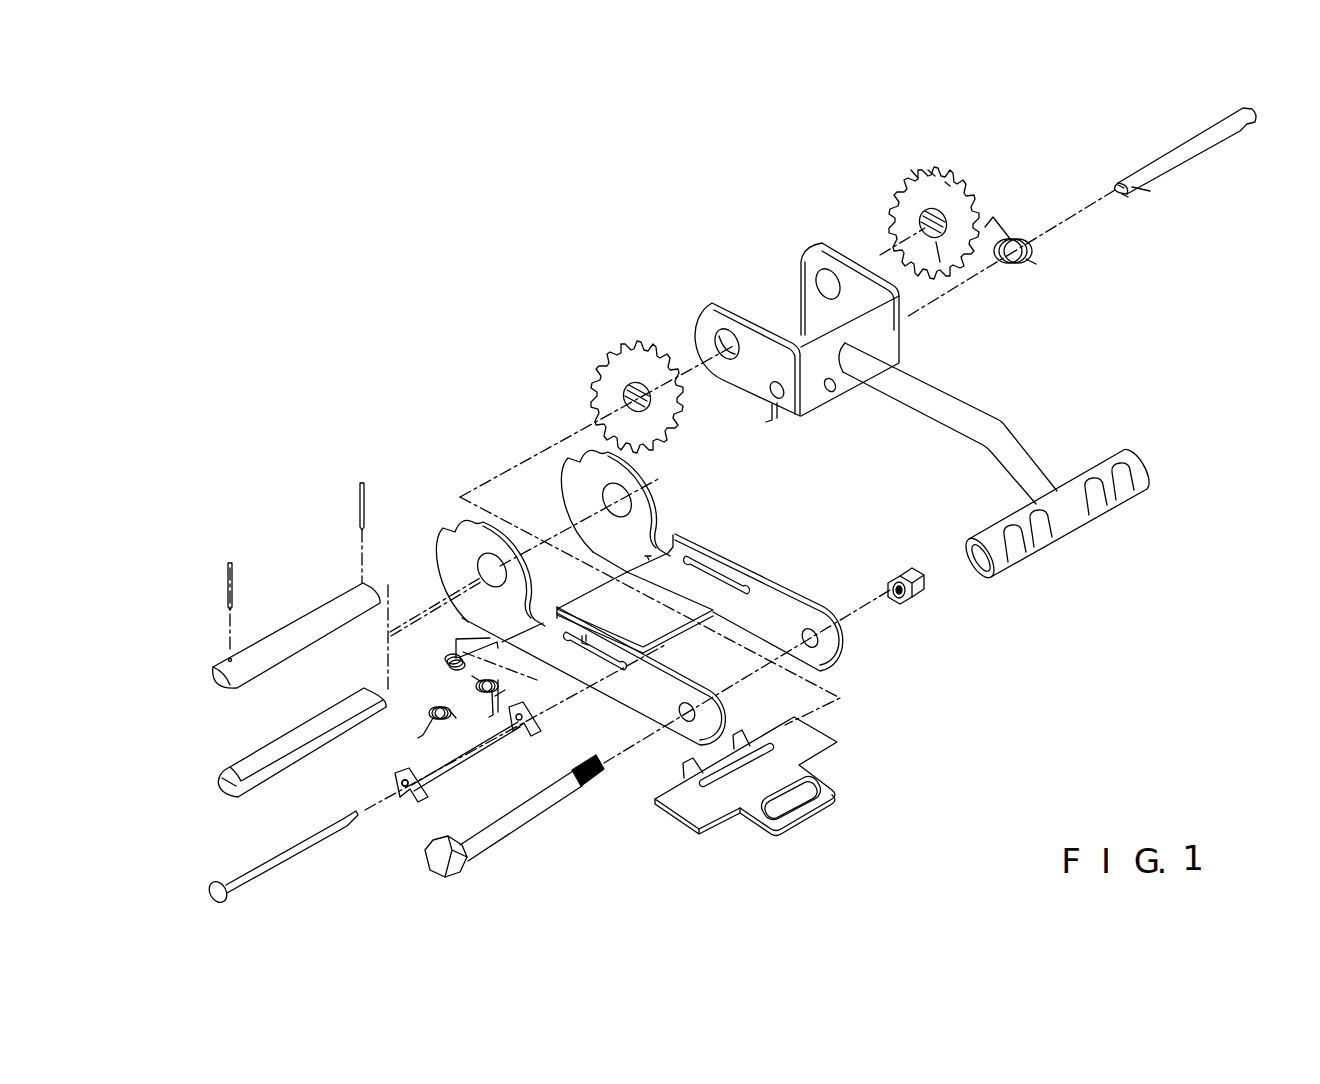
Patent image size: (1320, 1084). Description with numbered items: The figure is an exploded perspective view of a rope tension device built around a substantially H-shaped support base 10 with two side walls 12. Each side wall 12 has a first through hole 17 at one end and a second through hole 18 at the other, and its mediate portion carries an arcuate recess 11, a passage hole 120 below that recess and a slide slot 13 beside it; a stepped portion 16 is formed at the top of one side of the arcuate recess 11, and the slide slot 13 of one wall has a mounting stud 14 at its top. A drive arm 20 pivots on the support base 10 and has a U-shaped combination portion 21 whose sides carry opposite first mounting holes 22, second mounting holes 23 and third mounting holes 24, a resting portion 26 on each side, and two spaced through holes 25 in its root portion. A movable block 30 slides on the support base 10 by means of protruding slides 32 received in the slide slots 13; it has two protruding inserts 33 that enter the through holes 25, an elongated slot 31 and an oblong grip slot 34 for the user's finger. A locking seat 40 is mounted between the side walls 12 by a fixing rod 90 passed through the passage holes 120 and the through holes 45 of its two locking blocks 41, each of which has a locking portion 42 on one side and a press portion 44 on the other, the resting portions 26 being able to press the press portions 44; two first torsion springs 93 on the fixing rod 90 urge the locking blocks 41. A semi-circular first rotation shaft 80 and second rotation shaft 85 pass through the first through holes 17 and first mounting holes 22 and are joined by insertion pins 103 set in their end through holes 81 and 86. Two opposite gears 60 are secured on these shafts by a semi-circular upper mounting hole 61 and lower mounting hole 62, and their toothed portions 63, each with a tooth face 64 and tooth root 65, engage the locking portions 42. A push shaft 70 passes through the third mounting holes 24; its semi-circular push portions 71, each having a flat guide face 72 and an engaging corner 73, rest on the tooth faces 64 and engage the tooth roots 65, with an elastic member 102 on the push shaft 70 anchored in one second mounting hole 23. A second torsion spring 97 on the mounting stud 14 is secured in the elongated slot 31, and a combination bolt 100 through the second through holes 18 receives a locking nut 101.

The support base 10 is at (666, 597).
The arcuate recess 11 is at (702, 547).
The side wall 12 is at (798, 607).
The slide slot 13 is at (742, 592).
The mounting stud 14 is at (605, 630).
The stepped portion 16 is at (672, 545).
The first through hole 17 is at (622, 500).
The second through hole 18 is at (818, 638).
The drive arm 20 is at (919, 412).
The combination portion 21 is at (882, 336).
The first mounting hole 22 is at (723, 334).
The second mounting hole 23 is at (765, 342).
The third mounting hole 24 is at (770, 391).
The through hole 25 is at (834, 392).
The resting portion 26 is at (778, 420).
The movable block 30 is at (788, 803).
The elongated slot 31 is at (723, 778).
The protruding slide 32 is at (680, 800).
The protruding insert 33 is at (680, 774).
The grip slot 34 is at (800, 800).
The locking seat 40 is at (476, 753).
The locking block 41 is at (528, 736).
The locking portion 42 is at (389, 805).
The press portion 44 is at (418, 798).
The through hole 45 is at (530, 720).
The gear 60 is at (796, 275).
The upper mounting hole 61 is at (922, 213).
The lower mounting hole 62 is at (937, 245).
The toothed portion 63 is at (912, 168).
The tooth face 64 is at (930, 170).
The tooth root 65 is at (946, 182).
The push shaft 70 is at (1197, 143).
The push portion 71 is at (1132, 188).
The flat guide face 72 is at (1127, 197).
The engaging corner 73 is at (1114, 184).
The first rotation shaft 80 is at (279, 644).
The through hole 81 is at (228, 663).
The second rotation shaft 85 is at (284, 744).
The through hole 86 is at (235, 778).
The fixing rod 90 is at (280, 867).
The first torsion spring 93 is at (436, 710).
The second torsion spring 97 is at (450, 655).
The combination bolt 100 is at (518, 835).
The locking nut 101 is at (924, 598).
The elastic member 102 is at (1036, 264).
The insertion pin 103 is at (226, 567).
The passage hole 120 is at (524, 558).